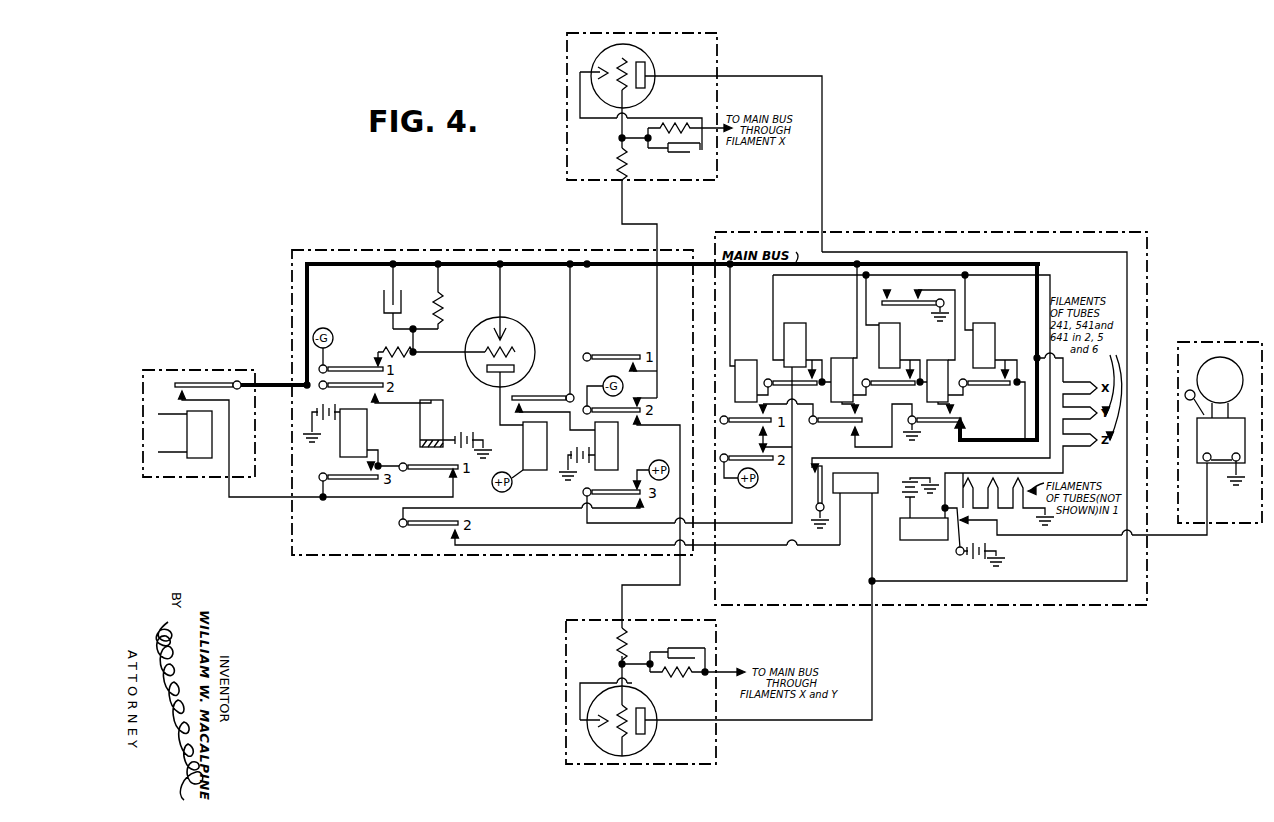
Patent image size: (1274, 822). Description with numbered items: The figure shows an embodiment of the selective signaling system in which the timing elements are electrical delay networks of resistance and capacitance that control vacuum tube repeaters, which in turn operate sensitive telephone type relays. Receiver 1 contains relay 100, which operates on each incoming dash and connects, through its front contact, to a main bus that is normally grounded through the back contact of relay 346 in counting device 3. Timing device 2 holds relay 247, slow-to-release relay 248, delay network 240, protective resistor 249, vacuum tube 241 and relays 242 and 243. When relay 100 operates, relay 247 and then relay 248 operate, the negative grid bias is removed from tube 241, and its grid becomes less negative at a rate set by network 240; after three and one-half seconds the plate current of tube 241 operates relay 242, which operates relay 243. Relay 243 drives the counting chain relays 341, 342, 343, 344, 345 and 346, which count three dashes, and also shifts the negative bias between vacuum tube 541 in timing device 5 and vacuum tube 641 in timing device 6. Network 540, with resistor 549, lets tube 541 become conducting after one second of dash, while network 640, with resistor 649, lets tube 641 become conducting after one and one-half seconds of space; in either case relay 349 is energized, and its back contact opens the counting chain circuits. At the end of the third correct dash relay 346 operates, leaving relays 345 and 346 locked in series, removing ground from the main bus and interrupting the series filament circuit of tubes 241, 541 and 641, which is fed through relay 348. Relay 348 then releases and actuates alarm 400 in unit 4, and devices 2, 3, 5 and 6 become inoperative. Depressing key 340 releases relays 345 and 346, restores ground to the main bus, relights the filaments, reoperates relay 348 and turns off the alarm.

The receiver 1 is at (189, 370).
The timing device 2 is at (480, 228).
The counting device 3 is at (985, 234).
The alarm unit 4 is at (1222, 326).
The timing device 5 is at (567, 106).
The timing device 6 is at (566, 682).
The relay 100 is at (195, 437).
The electrical network 240 is at (437, 291).
The vacuum tube 241 is at (516, 328).
The relay 242 is at (539, 463).
The relay 243 is at (617, 447).
The relay 247 is at (343, 450).
The relay 248 is at (435, 413).
The protective resistor 249 is at (383, 350).
The key 340 is at (907, 302).
The first counting chain relay 341 is at (795, 335).
The counting chain relay 342 is at (746, 372).
The counting chain relay 343 is at (890, 335).
The counting chain relay 344 is at (842, 370).
The counting chain relay 345 is at (984, 335).
The counting chain relay 346 is at (938, 372).
The relay 348 is at (928, 530).
The relay 349 is at (852, 482).
The alarm 400 is at (1220, 468).
The electrical network 540 is at (674, 152).
The vacuum tube 541 is at (592, 62).
The resistor 549 is at (618, 156).
The electrical network 640 is at (690, 656).
The vacuum tube 641 is at (650, 740).
The resistor 649 is at (618, 635).